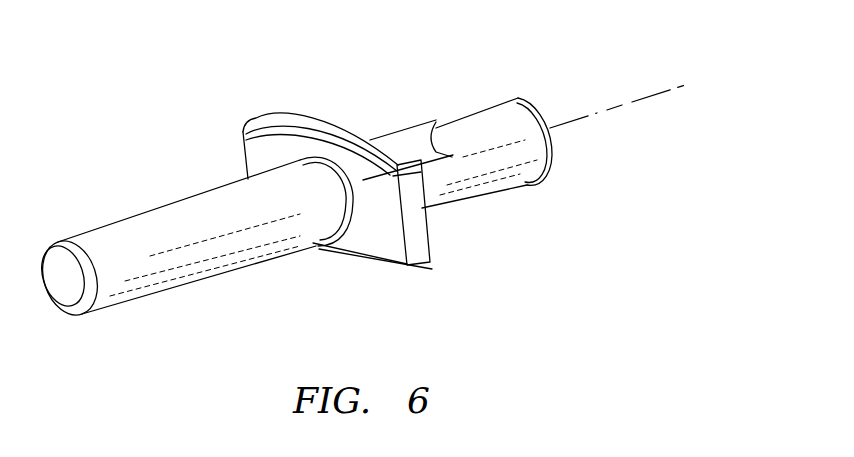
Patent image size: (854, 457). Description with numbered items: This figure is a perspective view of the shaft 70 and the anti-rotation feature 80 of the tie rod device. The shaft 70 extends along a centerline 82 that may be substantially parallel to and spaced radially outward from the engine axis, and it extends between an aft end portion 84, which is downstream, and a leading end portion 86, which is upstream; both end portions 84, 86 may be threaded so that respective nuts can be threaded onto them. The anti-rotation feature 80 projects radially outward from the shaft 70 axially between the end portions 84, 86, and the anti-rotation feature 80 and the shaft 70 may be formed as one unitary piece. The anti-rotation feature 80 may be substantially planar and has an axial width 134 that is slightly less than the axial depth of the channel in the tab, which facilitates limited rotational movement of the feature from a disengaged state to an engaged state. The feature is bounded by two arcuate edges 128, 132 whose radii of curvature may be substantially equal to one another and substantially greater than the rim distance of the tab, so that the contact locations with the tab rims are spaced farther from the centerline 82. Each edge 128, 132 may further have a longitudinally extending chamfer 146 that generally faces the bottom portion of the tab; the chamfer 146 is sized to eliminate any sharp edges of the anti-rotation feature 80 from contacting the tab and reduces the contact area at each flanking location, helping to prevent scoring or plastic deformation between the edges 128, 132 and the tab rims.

The shaft 70 is at (218, 281).
The anti-rotation feature 80 is at (436, 268).
The centerline 82 is at (647, 98).
The aft end portion 84 is at (157, 293).
The leading end portion 86 is at (510, 185).
The arcuate edge 128 is at (284, 118).
The arcuate edge 132 is at (377, 267).
The axial width 134 is at (437, 152).
The chamfer 146 is at (326, 140).